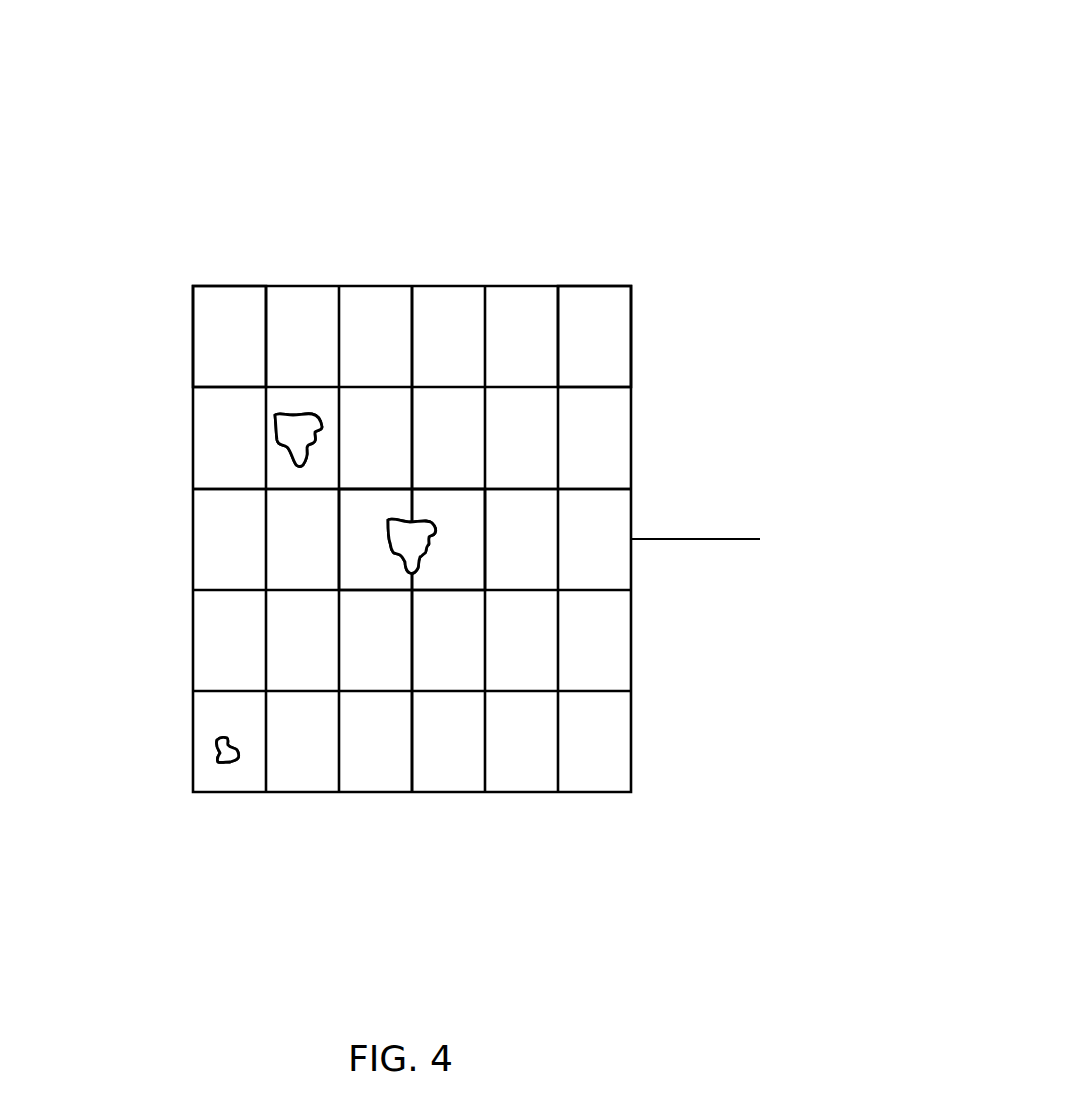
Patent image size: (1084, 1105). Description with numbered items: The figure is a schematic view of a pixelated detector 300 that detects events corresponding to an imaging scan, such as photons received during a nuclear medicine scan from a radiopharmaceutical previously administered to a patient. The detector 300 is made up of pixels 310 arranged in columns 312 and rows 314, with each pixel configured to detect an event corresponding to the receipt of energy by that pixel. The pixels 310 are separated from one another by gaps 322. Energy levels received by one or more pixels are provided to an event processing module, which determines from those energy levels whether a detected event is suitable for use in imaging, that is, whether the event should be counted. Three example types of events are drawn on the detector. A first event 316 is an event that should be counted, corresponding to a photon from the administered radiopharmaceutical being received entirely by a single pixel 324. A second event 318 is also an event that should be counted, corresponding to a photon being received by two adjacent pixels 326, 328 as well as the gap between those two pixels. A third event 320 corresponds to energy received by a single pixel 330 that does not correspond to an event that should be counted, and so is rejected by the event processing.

The pixelated detector 300 is at (657, 67).
The pixels 310 is at (615, 338).
The columns 312 is at (219, 266).
The rows 314 is at (192, 338).
The first event 316 is at (275, 420).
The second event 318 is at (435, 528).
The third event 320 is at (216, 745).
The gaps 322 is at (192, 488).
The single pixel 324 is at (300, 398).
The adjacent pixel 326 is at (355, 545).
The adjacent pixel 328 is at (462, 577).
The single pixel 330 is at (235, 778).